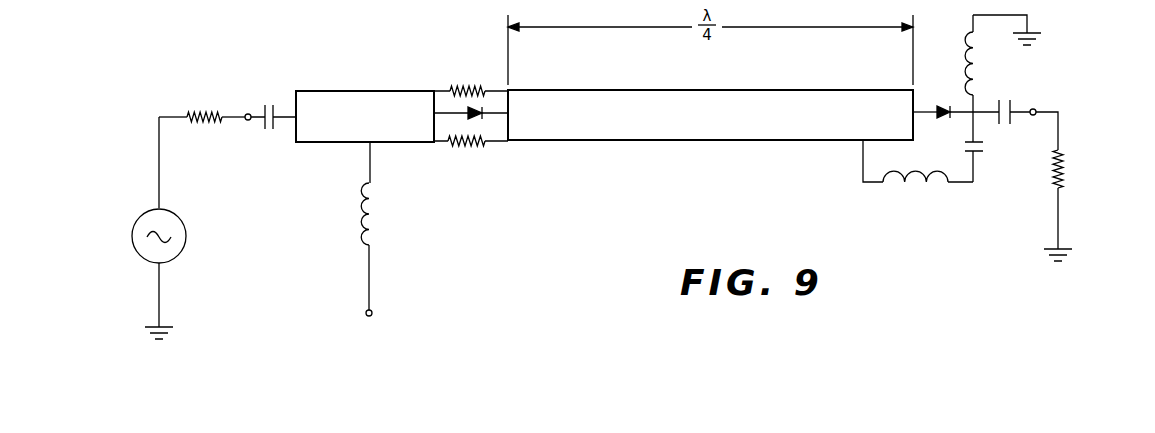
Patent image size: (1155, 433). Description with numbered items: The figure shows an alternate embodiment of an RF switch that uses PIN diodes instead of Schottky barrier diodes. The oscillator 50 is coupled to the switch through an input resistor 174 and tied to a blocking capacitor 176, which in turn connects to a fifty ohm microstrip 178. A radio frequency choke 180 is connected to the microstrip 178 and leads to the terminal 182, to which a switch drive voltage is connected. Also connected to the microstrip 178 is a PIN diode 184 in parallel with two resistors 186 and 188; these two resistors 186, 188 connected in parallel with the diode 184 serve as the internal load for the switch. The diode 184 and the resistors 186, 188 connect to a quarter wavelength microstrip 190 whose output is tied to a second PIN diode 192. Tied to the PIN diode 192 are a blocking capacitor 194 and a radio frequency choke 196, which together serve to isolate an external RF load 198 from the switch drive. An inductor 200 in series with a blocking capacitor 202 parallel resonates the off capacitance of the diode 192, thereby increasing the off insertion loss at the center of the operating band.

The oscillator 50 is at (182, 253).
The input resistor 174 is at (198, 111).
The blocking capacitor 176 is at (263, 104).
The 50 ohm microstrip 178 is at (350, 90).
The radio frequency choke 180 is at (372, 228).
The terminal 182 is at (373, 311).
The PIN diode 184 is at (484, 116).
The resistor 186 is at (470, 88).
The resistor 188 is at (467, 147).
The quarter wavelength microstrip 190 is at (625, 90).
The PIN diode 192 is at (945, 105).
The blocking capacitor 194 is at (1011, 103).
The radio frequency choke 196 is at (975, 72).
The external RF load 198 is at (1066, 165).
The inductor 200 is at (912, 179).
The blocking capacitor 202 is at (985, 145).